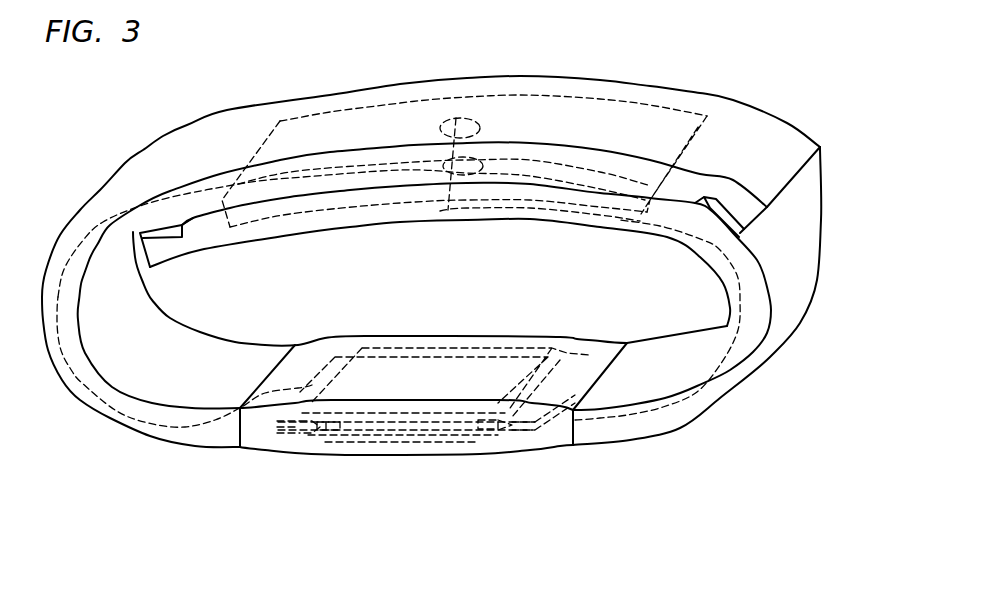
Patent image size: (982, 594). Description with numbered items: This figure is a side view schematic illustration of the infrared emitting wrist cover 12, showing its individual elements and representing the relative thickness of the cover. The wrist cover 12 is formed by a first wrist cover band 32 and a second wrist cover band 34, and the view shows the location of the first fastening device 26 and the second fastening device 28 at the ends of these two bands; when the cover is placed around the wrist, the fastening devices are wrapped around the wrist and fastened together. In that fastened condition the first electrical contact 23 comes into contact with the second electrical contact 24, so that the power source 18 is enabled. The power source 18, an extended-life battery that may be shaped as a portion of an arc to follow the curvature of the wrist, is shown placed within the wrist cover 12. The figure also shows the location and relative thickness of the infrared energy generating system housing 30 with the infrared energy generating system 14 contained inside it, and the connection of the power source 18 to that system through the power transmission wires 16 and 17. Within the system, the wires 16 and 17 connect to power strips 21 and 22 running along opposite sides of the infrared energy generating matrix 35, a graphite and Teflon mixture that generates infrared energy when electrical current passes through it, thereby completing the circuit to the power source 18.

The infrared emitting wrist cover 12 is at (122, 130).
The infrared energy generating system 14 is at (356, 449).
The power transmission wire 16 is at (127, 413).
The power transmission wire 17 is at (673, 410).
The power source 18 is at (318, 126).
The power strip 21 is at (325, 438).
The power strip 22 is at (483, 430).
The first electrical contact 23 is at (436, 122).
The second electrical contact 24 is at (480, 160).
The first fastening device 26 is at (160, 240).
The second fastening device 28 is at (720, 222).
The infrared energy generating system housing 30 is at (555, 437).
The first wrist cover band 32 is at (183, 331).
The second wrist cover band 34 is at (812, 257).
The infrared energy generating matrix 35 is at (396, 428).